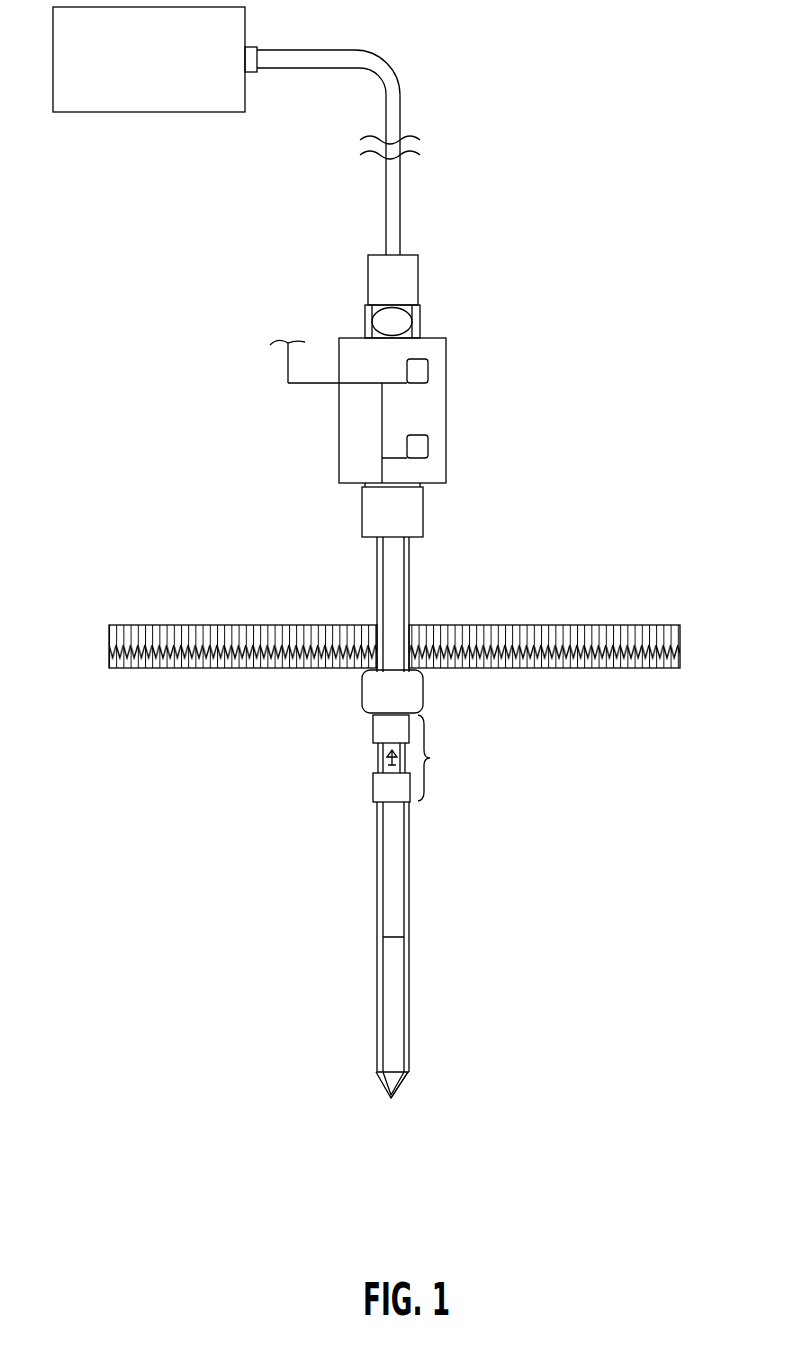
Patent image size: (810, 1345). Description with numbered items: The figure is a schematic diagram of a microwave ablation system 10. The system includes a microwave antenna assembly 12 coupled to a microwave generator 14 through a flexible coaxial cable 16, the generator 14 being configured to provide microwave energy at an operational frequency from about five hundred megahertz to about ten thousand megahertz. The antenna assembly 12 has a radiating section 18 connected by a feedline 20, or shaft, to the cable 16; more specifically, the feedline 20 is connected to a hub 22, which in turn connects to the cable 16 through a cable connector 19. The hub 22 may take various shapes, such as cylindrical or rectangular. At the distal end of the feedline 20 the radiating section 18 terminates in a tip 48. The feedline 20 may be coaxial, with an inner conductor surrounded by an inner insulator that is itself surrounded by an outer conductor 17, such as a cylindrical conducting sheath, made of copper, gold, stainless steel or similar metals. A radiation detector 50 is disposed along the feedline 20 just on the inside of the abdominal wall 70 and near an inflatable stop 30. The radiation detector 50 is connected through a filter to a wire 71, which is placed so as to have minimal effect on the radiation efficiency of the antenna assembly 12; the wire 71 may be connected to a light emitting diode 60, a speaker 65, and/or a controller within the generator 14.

The microwave ablation system 10 is at (622, 242).
The microwave antenna assembly 12 is at (368, 588).
The microwave generator 14 is at (165, 87).
The flexible coaxial cable 16 is at (337, 52).
The outer conductor 17 is at (392, 560).
The radiating section 18 is at (408, 1030).
The cable connector 19 is at (418, 282).
The feedline 20 is at (410, 595).
The hub 22 is at (446, 392).
The inflatable stop 30 is at (425, 693).
The tip 48 is at (405, 1082).
The radiation detector 50 is at (419, 758).
The light emitting diode 60 is at (428, 372).
The speaker 65 is at (428, 446).
The abdominal wall 70 is at (580, 625).
The wire 71 is at (300, 385).